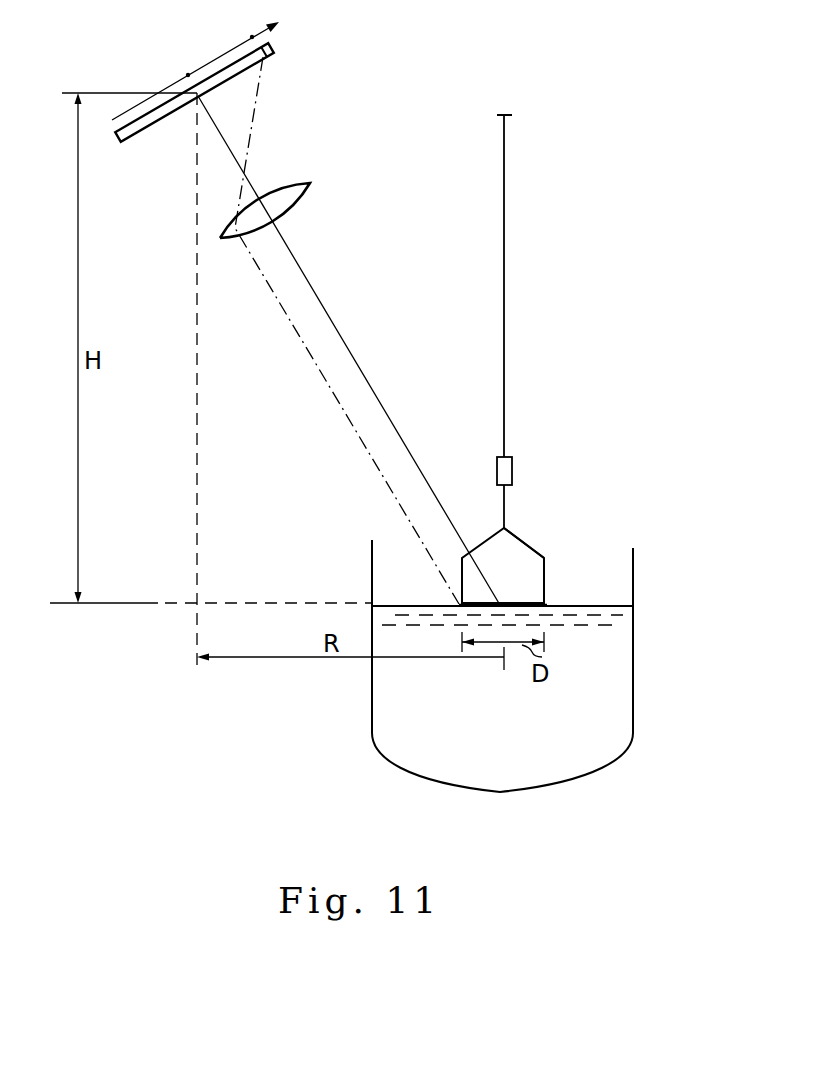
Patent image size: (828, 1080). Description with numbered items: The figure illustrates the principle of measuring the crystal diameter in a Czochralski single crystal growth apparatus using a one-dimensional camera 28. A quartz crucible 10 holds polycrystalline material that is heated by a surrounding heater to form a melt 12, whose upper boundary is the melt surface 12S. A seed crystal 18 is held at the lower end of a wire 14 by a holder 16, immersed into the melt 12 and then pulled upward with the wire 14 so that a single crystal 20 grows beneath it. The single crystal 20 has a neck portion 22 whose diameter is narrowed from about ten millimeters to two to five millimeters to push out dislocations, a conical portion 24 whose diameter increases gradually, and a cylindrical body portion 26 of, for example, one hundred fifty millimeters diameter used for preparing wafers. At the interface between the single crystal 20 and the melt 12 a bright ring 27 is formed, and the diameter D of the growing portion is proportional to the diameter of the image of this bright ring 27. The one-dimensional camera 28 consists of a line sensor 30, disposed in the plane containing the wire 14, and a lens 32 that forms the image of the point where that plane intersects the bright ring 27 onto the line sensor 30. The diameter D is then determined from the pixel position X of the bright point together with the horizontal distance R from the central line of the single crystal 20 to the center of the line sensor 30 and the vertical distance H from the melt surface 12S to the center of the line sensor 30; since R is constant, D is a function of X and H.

The quartz crucible 10 is at (634, 683).
The melt 12 is at (612, 665).
The melt surface 12S is at (402, 605).
The wire 14 is at (505, 382).
The holder 16 is at (512, 465).
The seed crystal 18 is at (505, 491).
The single crystal 20 is at (592, 497).
The neck portion 22 is at (497, 493).
The conical portion 24 is at (513, 522).
The cylindrical body portion 26 is at (545, 587).
The bright ring 27 is at (513, 603).
The one-dimensional camera 28 is at (257, 123).
The line sensor 30 is at (273, 47).
The lens 32 is at (285, 179).